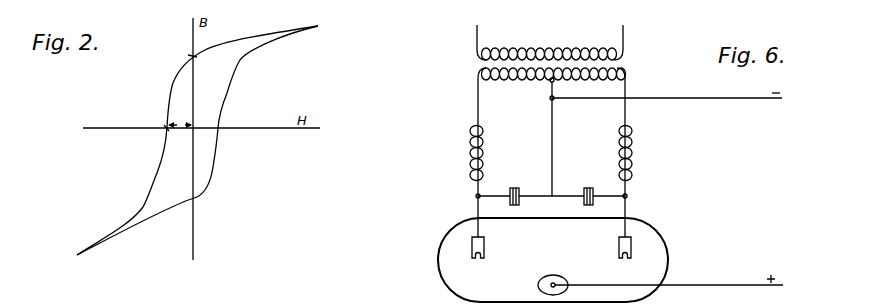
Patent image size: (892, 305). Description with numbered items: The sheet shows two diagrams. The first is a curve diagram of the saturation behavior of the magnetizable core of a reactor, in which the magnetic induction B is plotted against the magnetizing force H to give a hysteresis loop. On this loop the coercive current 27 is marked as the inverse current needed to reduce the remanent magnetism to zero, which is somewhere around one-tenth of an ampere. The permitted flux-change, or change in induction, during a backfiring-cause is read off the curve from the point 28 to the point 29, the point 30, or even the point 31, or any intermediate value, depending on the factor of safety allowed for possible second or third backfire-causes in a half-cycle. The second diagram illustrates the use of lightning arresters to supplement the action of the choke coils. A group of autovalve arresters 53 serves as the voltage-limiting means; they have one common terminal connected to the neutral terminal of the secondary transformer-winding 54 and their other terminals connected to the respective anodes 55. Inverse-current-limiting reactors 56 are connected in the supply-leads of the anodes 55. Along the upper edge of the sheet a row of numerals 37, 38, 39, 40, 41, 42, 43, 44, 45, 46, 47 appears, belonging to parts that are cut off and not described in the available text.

In FIG. 2, the coercive current 27 is at (177, 121).
In FIG. 2, the point on the curve 28 is at (192, 56).
In FIG. 2, the point on the curve 29 is at (172, 82).
In FIG. 2, the point on the curve 30 is at (166, 129).
In FIG. 2, the point on the curve 31 is at (143, 203).
In FIG. 6, the winding terminal 37 is at (419, 4).
In FIG. 6, the winding terminal 38 is at (446, 4).
In FIG. 6, the winding terminal 39 is at (474, 4).
In FIG. 6, the winding terminal 40 is at (501, 4).
In FIG. 6, the winding terminal 41 is at (529, 4).
In FIG. 6, the winding terminal 42 is at (556, 4).
In FIG. 6, the winding terminal 43 is at (584, 4).
In FIG. 6, the winding terminal 44 is at (611, 4).
In FIG. 6, the winding terminal 45 is at (639, 4).
In FIG. 6, the winding terminal 46 is at (666, 4).
In FIG. 6, the winding terminal 47 is at (694, 4).
In FIG. 6, the autovalve arrester 53 is at (522, 180).
In FIG. 6, the secondary transformer-winding 54 is at (617, 63).
In FIG. 6, the anode 55 is at (472, 238).
In FIG. 6, the inverse-current-limiting reactor 56 is at (469, 143).